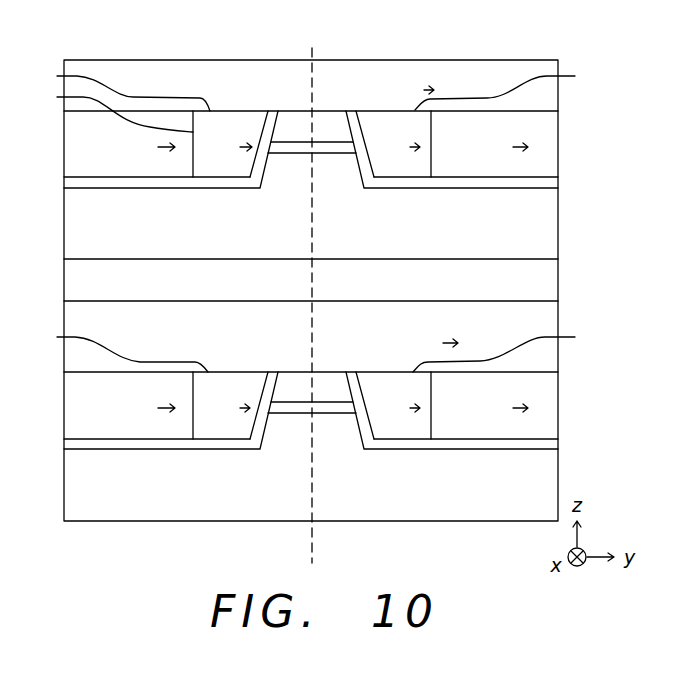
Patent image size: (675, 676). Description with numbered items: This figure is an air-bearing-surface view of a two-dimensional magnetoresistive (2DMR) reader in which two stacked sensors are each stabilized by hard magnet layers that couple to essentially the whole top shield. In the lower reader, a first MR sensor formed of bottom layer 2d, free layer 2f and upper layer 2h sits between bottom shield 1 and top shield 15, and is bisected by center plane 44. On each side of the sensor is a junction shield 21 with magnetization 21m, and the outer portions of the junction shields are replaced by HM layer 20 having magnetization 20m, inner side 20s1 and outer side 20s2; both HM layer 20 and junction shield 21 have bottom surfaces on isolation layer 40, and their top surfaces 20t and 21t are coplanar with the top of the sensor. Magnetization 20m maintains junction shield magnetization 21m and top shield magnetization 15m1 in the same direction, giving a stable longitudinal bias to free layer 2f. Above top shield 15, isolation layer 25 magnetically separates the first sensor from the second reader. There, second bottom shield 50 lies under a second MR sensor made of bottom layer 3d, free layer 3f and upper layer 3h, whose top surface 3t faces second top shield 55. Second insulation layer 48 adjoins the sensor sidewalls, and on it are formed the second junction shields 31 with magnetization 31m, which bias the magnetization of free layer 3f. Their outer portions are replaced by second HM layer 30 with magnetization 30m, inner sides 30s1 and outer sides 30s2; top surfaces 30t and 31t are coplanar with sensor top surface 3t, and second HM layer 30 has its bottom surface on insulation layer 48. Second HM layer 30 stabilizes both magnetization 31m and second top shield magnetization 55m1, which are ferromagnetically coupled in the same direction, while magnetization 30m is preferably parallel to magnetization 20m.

The bottom shield 1 is at (548, 477).
The isolation layer 40 is at (72, 443).
The HM layer 20 is at (70, 392).
The magnetization of HM layer 20m is at (98, 409).
The inner side of HM layer 20s1 is at (190, 427).
The outer side of HM layer 20s2 is at (64, 413).
The top surface of HM layer 20t is at (83, 372).
The junction shield 21 is at (218, 428).
The magnetization of junction shield 21m is at (200, 409).
The top surface of junction shield 21t is at (315, 349).
The bottom layer of first MR sensor 2d is at (280, 439).
The free layer 2f is at (298, 408).
The upper layer of first MR sensor 2h is at (333, 395).
The top shield 15 is at (548, 317).
The top shield magnetization 15m1 is at (388, 345).
The isolation layer 25 is at (548, 279).
The second bottom shield 50 is at (548, 226).
The second insulation layer 48 is at (70, 183).
The second HM layer 30 is at (70, 132).
The magnetization of second HM layer 30m is at (100, 150).
The inner side of second HM layer 30s1 is at (99, 109).
The outer side of second HM layer 30s2 is at (64, 152).
The top surface of second HM layer 30t is at (540, 111).
The second junction shield 31 is at (230, 120).
The magnetization of second junction shield 31m is at (238, 150).
The top surface of second junction shield 31t is at (315, 87).
The bottom layer of second MR sensor 3d is at (322, 167).
The free layer of second MR sensor 3f is at (297, 148).
The upper layer of second MR sensor 3h is at (287, 122).
The top surface of second MR sensor 3t is at (337, 112).
The second top shield 55 is at (513, 70).
The second top shield magnetization 55m1 is at (424, 91).
The center plane 44 is at (312, 306).